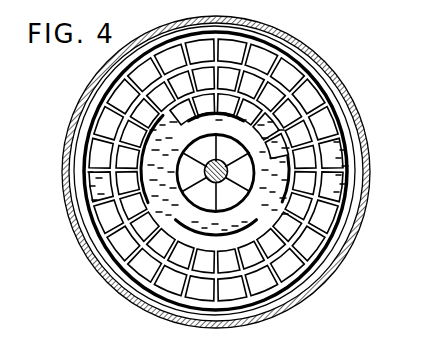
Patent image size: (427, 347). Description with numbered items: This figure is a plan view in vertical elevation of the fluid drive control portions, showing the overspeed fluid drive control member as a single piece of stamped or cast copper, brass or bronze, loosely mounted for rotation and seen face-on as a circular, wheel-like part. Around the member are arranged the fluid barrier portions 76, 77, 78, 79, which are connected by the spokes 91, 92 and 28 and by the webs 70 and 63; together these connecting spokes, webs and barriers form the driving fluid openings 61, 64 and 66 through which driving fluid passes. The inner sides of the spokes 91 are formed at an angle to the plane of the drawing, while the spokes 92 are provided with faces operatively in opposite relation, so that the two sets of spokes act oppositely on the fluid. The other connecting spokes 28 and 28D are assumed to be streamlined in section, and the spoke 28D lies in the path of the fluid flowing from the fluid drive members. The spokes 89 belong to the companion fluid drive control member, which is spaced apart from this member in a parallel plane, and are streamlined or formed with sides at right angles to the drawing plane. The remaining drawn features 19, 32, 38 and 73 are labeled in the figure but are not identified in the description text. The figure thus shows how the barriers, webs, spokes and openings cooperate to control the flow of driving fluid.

The outer casing 19 is at (272, 26).
The spider hub with spokes 32 is at (224, 163).
The driving fluid opening 66 is at (308, 102).
The web 70 is at (311, 133).
The fluid barrier portion 78 is at (331, 162).
The spoke 89 is at (226, 175).
The spoke 91 is at (322, 210).
The driving fluid opening 64 is at (283, 232).
The connecting spoke 28D is at (262, 243).
The cell 38 is at (260, 303).
The fluid barrier portion 77 is at (230, 291).
The fluid barrier portion 76 is at (202, 53).
The fluid barrier portion 79 is at (100, 185).
The connecting spoke 28 is at (113, 250).
The inner ring wall 73 is at (95, 221).
The web 63 is at (128, 270).
The spoke 92 is at (166, 147).
The driving fluid opening 61 is at (204, 238).